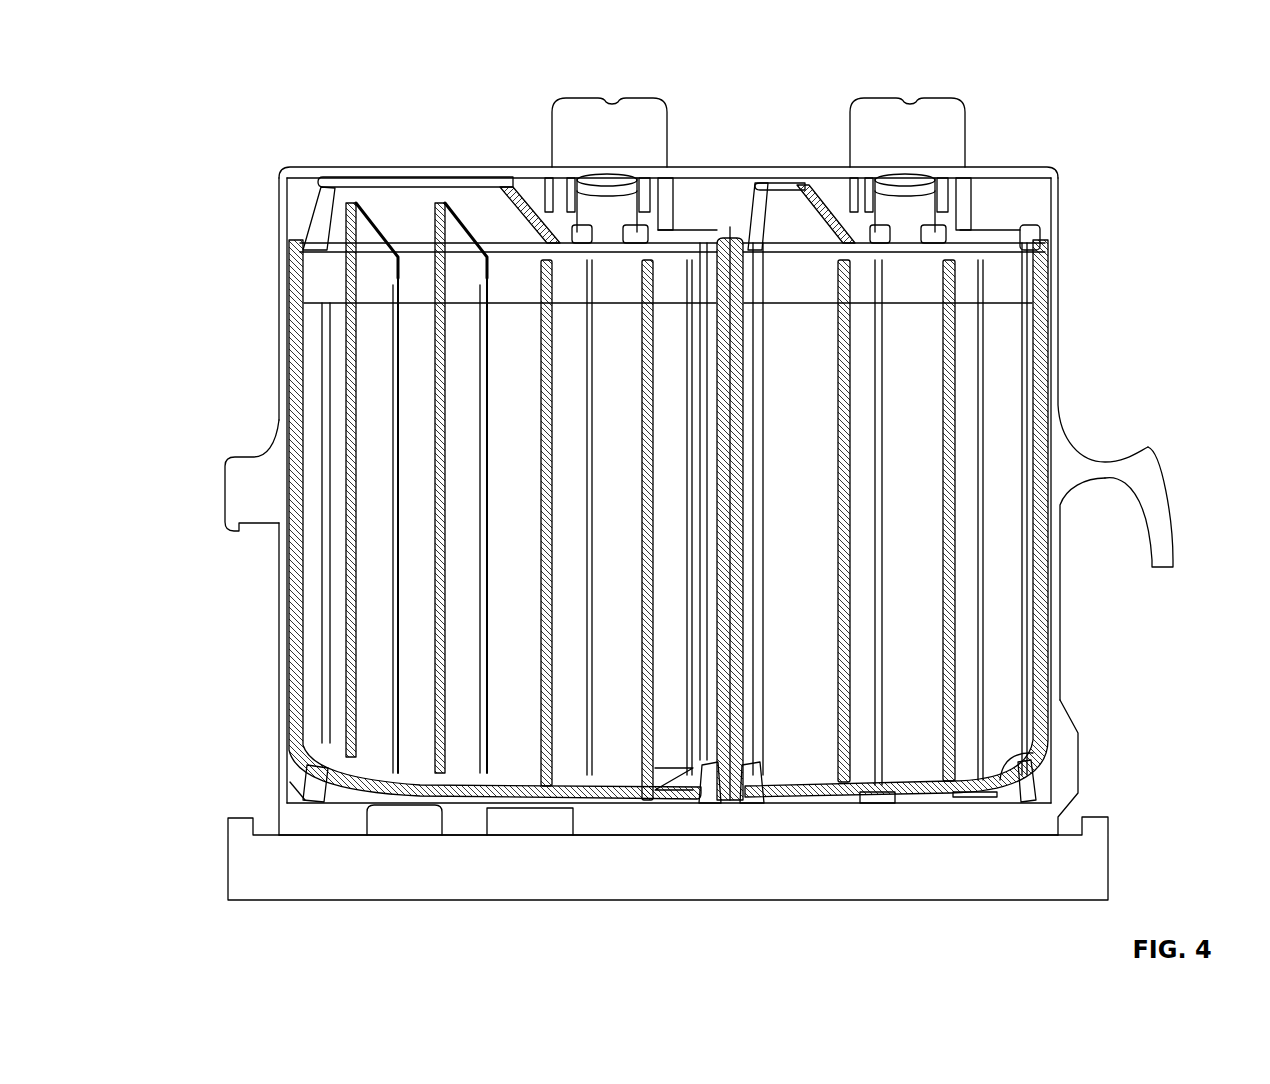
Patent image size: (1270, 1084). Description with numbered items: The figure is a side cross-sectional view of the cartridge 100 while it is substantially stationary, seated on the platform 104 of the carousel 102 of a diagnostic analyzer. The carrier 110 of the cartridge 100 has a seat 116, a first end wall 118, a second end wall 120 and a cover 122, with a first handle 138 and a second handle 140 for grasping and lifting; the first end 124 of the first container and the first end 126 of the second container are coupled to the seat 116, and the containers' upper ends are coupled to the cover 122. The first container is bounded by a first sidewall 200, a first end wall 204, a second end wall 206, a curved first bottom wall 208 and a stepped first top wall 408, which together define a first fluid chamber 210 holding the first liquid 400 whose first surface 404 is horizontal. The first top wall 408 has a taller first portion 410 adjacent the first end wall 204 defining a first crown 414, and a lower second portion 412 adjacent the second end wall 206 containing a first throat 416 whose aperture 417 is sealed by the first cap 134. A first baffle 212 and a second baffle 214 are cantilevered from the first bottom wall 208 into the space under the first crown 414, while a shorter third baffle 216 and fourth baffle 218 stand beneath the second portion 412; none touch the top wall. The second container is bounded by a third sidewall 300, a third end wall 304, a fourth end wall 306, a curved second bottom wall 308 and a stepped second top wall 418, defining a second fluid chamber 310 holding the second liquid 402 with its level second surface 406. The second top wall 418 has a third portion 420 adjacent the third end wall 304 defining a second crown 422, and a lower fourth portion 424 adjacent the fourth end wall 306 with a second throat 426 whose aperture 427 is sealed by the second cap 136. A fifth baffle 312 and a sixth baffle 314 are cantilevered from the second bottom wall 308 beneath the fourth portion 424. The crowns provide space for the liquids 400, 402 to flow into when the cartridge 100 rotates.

The cartridge 100 is at (1155, 76).
The carousel 102 is at (1098, 843).
The platform 104 is at (1072, 835).
The carrier 110 is at (1063, 168).
The seat 116 is at (453, 827).
The first end wall 118 is at (283, 385).
The second end wall 120 is at (1063, 400).
The cover 122 is at (305, 166).
The first end of the first container 124 is at (337, 803).
The first end of the second container 126 is at (1007, 795).
The first cap 134 is at (612, 112).
The second cap 136 is at (912, 112).
The first handle 138 is at (240, 490).
The second handle 140 is at (1140, 465).
The first sidewall 200 is at (410, 283).
The first end wall 204 is at (296, 612).
The second end wall 206 is at (710, 800).
The first bottom wall 208 is at (405, 803).
The first fluid chamber 210 is at (312, 283).
The first baffle 212 is at (350, 672).
The second baffle 214 is at (440, 718).
The third baffle 216 is at (550, 800).
The fourth baffle 218 is at (650, 800).
The third sidewall 300 is at (927, 303).
The third end wall 304 is at (753, 643).
The fourth end wall 306 is at (1046, 518).
The second bottom wall 308 is at (895, 800).
The second fluid chamber 310 is at (1001, 268).
The fifth baffle 312 is at (843, 717).
The sixth baffle 314 is at (848, 636).
The first liquid 400 is at (491, 545).
The second liquid 402 is at (891, 545).
The first surface 404 is at (478, 178).
The second surface 406 is at (992, 290).
The first top wall 408 is at (475, 182).
The first portion 410 is at (370, 178).
The second portion 412 is at (685, 233).
The first crown 414 is at (313, 212).
The first throat 416 is at (517, 300).
The aperture 417 is at (597, 213).
The second top wall 418 is at (1027, 233).
The third portion 420 is at (772, 188).
The second crown 422 is at (792, 220).
The fourth portion 424 is at (997, 233).
The second throat 426 is at (925, 185).
The aperture 427 is at (907, 213).